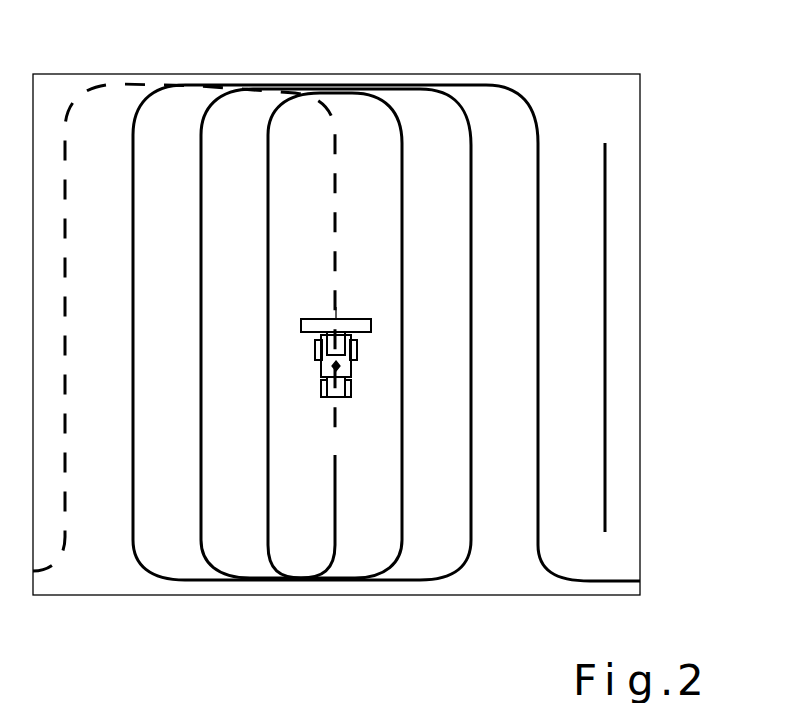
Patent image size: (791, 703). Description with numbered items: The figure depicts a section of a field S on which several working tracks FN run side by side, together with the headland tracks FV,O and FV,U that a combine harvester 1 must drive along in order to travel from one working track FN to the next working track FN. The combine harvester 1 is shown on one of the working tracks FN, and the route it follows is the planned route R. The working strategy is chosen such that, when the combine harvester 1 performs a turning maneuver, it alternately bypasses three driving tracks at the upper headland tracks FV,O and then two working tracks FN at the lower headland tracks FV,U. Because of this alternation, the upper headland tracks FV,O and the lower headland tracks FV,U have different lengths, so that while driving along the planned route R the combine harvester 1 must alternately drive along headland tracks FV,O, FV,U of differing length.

The combine harvester 1 is at (340, 400).
The planned route R is at (545, 567).
The field S is at (383, 603).
The working tracks FN is at (293, 209).
The upper headland tracks FV,O is at (327, 85).
The lower headland tracks FV,U is at (287, 565).